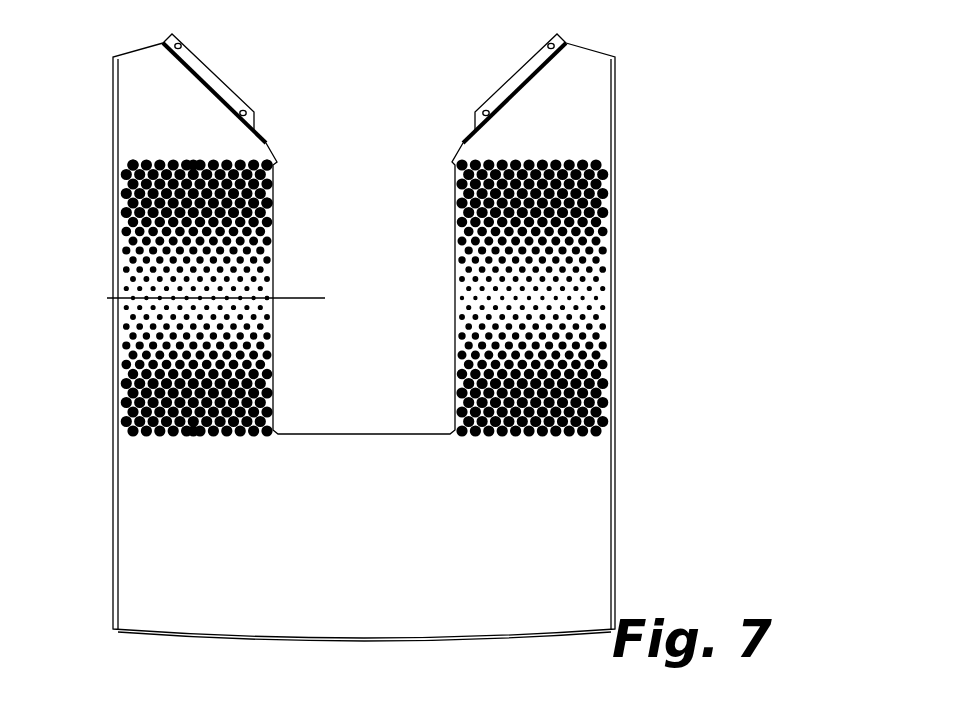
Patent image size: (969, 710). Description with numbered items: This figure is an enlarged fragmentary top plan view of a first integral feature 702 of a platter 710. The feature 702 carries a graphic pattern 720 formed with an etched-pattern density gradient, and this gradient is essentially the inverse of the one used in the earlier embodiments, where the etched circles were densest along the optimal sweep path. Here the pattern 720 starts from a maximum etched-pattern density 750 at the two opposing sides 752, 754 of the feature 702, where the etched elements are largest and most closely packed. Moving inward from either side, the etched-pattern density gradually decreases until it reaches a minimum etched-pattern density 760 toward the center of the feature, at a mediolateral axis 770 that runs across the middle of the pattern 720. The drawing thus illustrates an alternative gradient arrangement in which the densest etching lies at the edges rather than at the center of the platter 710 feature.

The first integral feature 702 is at (106, 162).
The platter 710 is at (262, 150).
The graphic pattern 720 is at (273, 166).
The maximum etched-pattern density 750 is at (133, 162).
The opposing side 752 is at (192, 162).
The opposing side 754 is at (193, 434).
The minimum etched-pattern density 760 is at (267, 302).
The mediolateral axis 770 is at (295, 297).